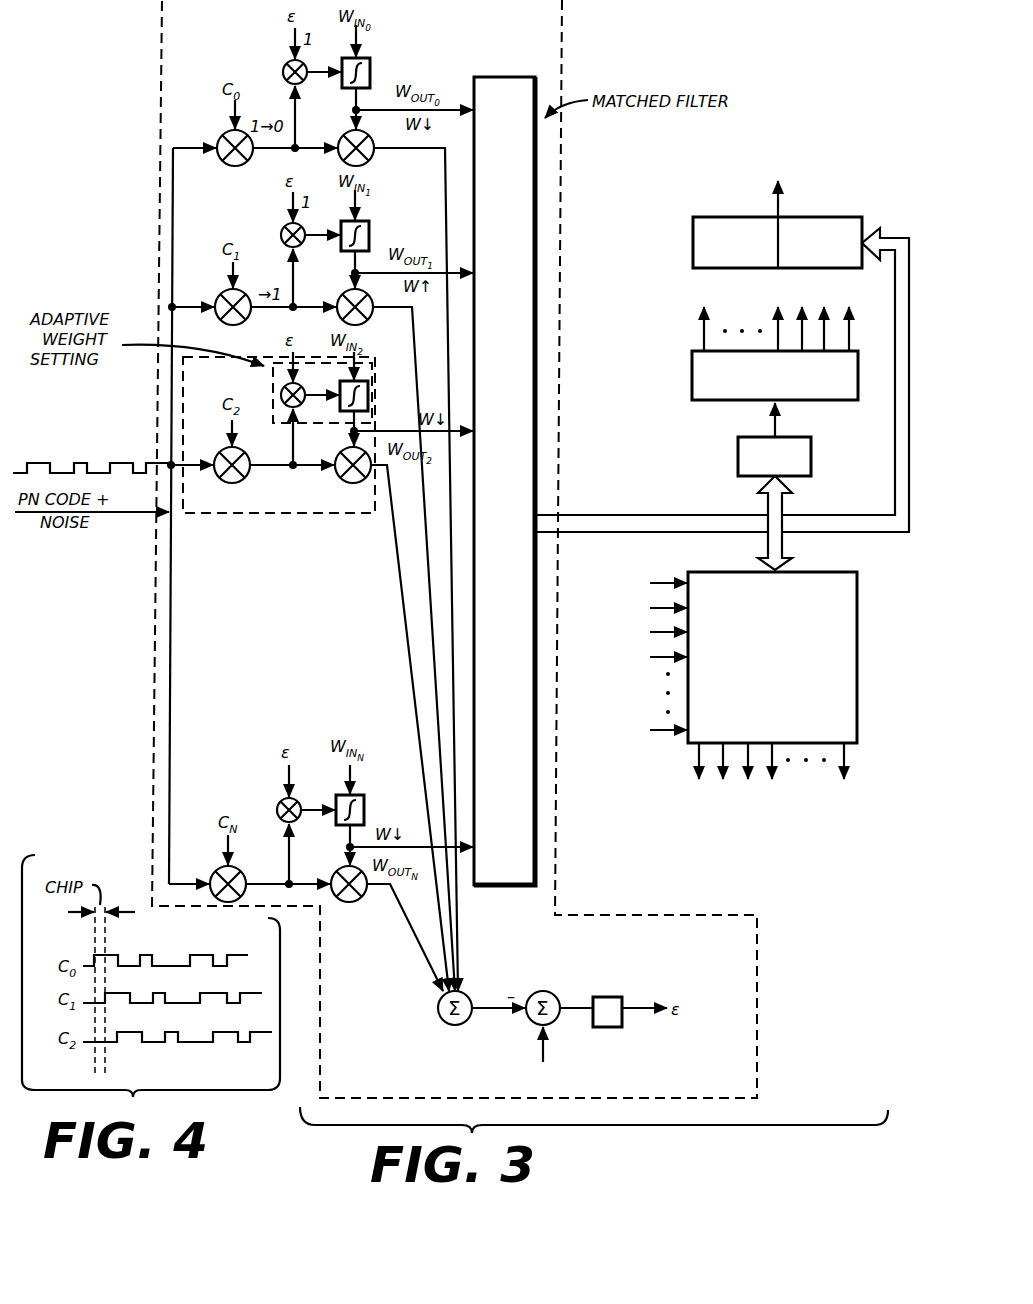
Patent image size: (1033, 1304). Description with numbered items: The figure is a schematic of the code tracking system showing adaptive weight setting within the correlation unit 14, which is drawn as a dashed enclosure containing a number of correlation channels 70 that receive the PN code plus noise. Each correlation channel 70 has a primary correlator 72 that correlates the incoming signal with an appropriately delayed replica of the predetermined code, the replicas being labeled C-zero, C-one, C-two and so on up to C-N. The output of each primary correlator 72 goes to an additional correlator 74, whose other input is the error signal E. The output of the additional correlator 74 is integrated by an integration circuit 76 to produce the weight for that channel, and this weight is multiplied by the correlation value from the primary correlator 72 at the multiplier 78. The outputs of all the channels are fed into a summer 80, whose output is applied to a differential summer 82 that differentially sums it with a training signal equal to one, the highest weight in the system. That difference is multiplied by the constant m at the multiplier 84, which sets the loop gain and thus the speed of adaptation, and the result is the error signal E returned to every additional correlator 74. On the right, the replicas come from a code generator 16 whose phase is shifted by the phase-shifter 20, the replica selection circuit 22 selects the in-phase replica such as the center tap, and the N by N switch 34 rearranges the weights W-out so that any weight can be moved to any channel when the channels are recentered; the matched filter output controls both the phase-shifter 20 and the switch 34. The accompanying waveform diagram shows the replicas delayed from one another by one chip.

The correlation unit 14 is at (565, 22).
The code generator 16 is at (692, 363).
The phase-shifter 20 is at (811, 450).
The replica selection circuit 22 is at (815, 217).
The N x N switch 34 is at (857, 658).
The correlation channel 70 is at (207, 518).
The primary correlator 72 is at (227, 165).
The additional correlator 74 is at (283, 68).
The integration circuit 76 is at (370, 77).
The multiplier 78 is at (372, 162).
The summer 80 is at (437, 1009).
The differential summer 82 is at (538, 991).
The multiplier 84 is at (606, 997).